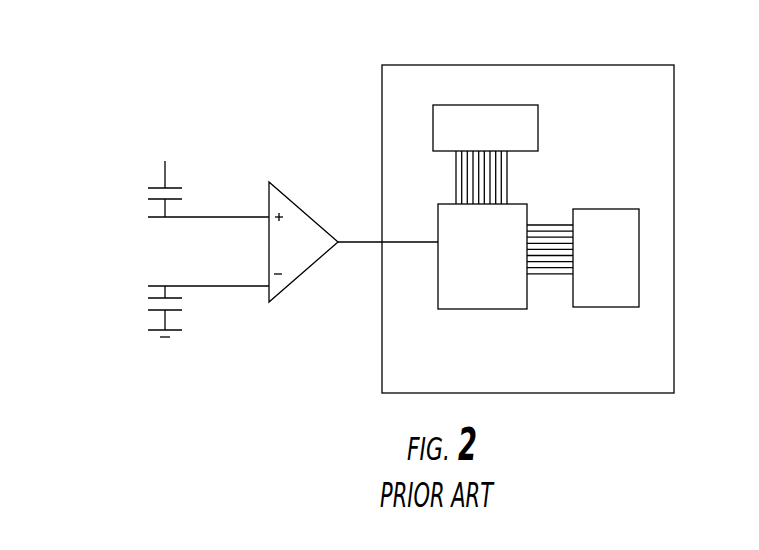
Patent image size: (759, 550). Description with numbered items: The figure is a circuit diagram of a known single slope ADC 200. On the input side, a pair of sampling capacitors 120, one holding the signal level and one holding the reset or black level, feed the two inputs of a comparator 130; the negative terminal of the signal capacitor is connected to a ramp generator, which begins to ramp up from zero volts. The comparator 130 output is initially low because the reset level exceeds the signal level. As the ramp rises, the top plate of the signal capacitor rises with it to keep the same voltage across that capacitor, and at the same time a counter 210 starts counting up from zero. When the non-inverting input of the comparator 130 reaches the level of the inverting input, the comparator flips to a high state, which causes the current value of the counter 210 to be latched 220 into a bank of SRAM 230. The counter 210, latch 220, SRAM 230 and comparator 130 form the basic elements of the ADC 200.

The sampling capacitors Csig and Cblk 120 is at (148, 310).
The comparator 130 is at (317, 206).
The single slope ADC 200 is at (675, 85).
The counter 210 is at (520, 105).
The latch 220 is at (397, 332).
The SRAM 230 is at (640, 235).